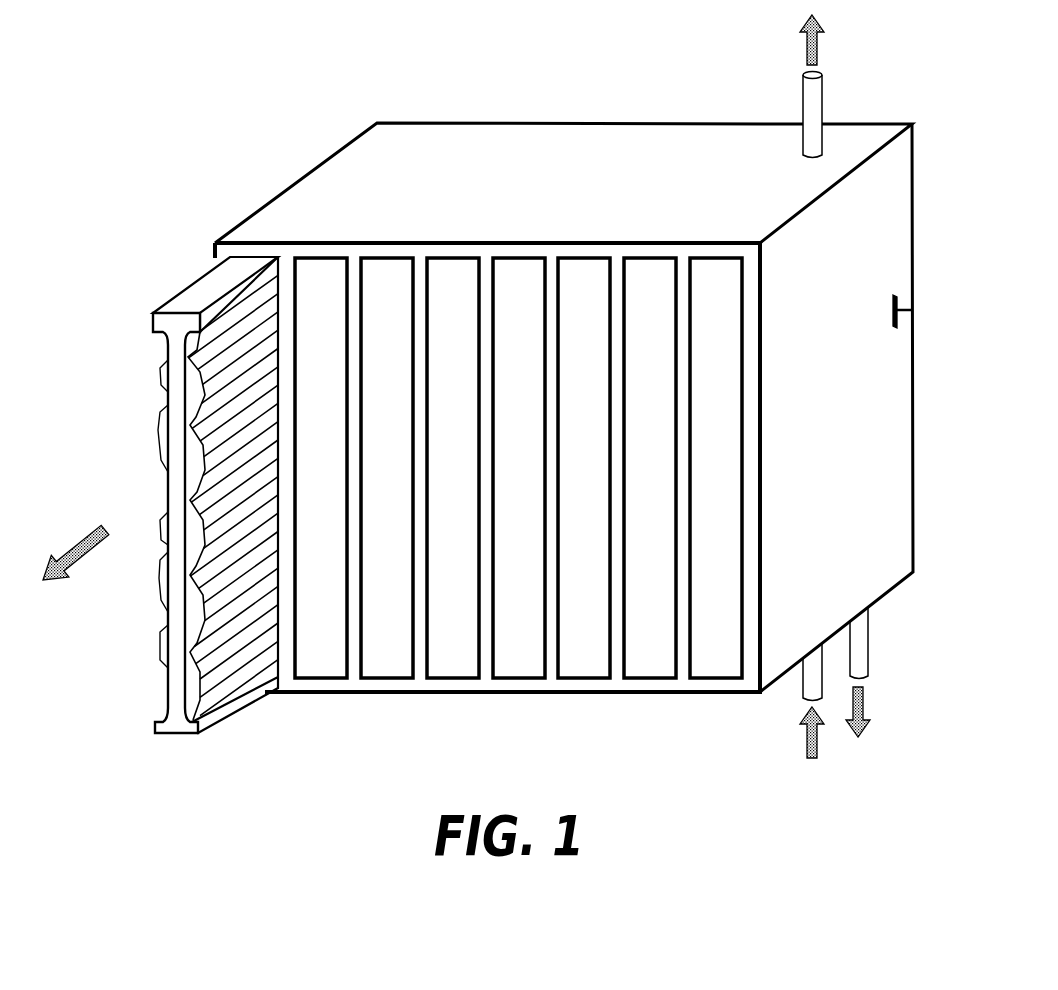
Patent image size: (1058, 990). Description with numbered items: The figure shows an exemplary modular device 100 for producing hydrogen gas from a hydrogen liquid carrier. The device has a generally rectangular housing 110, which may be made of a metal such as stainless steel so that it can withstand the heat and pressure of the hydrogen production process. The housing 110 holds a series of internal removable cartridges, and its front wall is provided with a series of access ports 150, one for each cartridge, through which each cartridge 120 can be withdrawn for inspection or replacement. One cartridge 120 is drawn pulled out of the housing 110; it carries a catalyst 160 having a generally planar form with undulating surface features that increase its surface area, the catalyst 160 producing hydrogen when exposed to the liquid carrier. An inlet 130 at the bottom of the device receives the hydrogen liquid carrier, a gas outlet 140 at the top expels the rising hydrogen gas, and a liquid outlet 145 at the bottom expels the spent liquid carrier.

The modular device 100 is at (502, 40).
The housing 110 is at (905, 310).
The cartridge 120 is at (190, 300).
The inlet 130 is at (808, 685).
The gas outlet 140 is at (817, 97).
The liquid outlet 145 is at (863, 653).
The access port 150 is at (323, 662).
The catalyst 160 is at (162, 403).